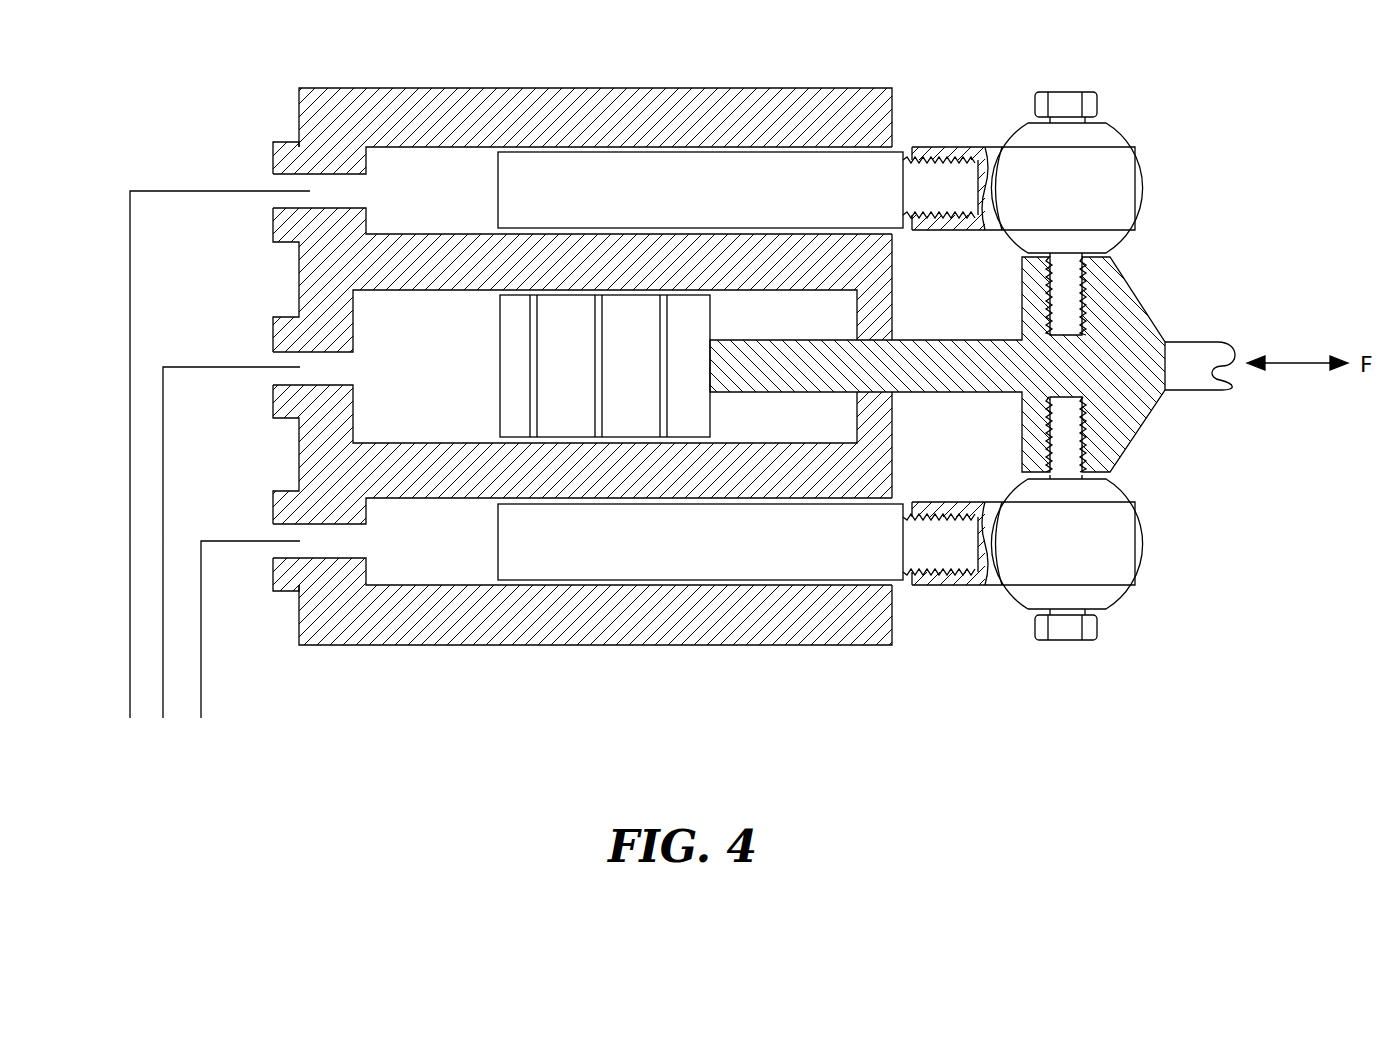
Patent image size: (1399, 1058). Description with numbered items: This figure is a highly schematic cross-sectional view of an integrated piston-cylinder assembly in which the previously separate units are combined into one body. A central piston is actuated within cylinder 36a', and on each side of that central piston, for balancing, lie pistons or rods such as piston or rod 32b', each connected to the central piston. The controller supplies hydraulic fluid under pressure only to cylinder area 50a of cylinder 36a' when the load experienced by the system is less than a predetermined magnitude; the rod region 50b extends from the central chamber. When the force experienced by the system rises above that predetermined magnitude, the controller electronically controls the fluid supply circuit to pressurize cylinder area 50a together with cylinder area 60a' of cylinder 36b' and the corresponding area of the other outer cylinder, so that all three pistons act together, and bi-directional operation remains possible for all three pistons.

The cylinder 36b' is at (595, 639).
The cylinder 36a' is at (537, 366).
The cylinder area 50a is at (440, 372).
The central piston rod 50b is at (810, 327).
The cylinder area 60a' is at (582, 541).
The piston or rod 32b' is at (736, 542).